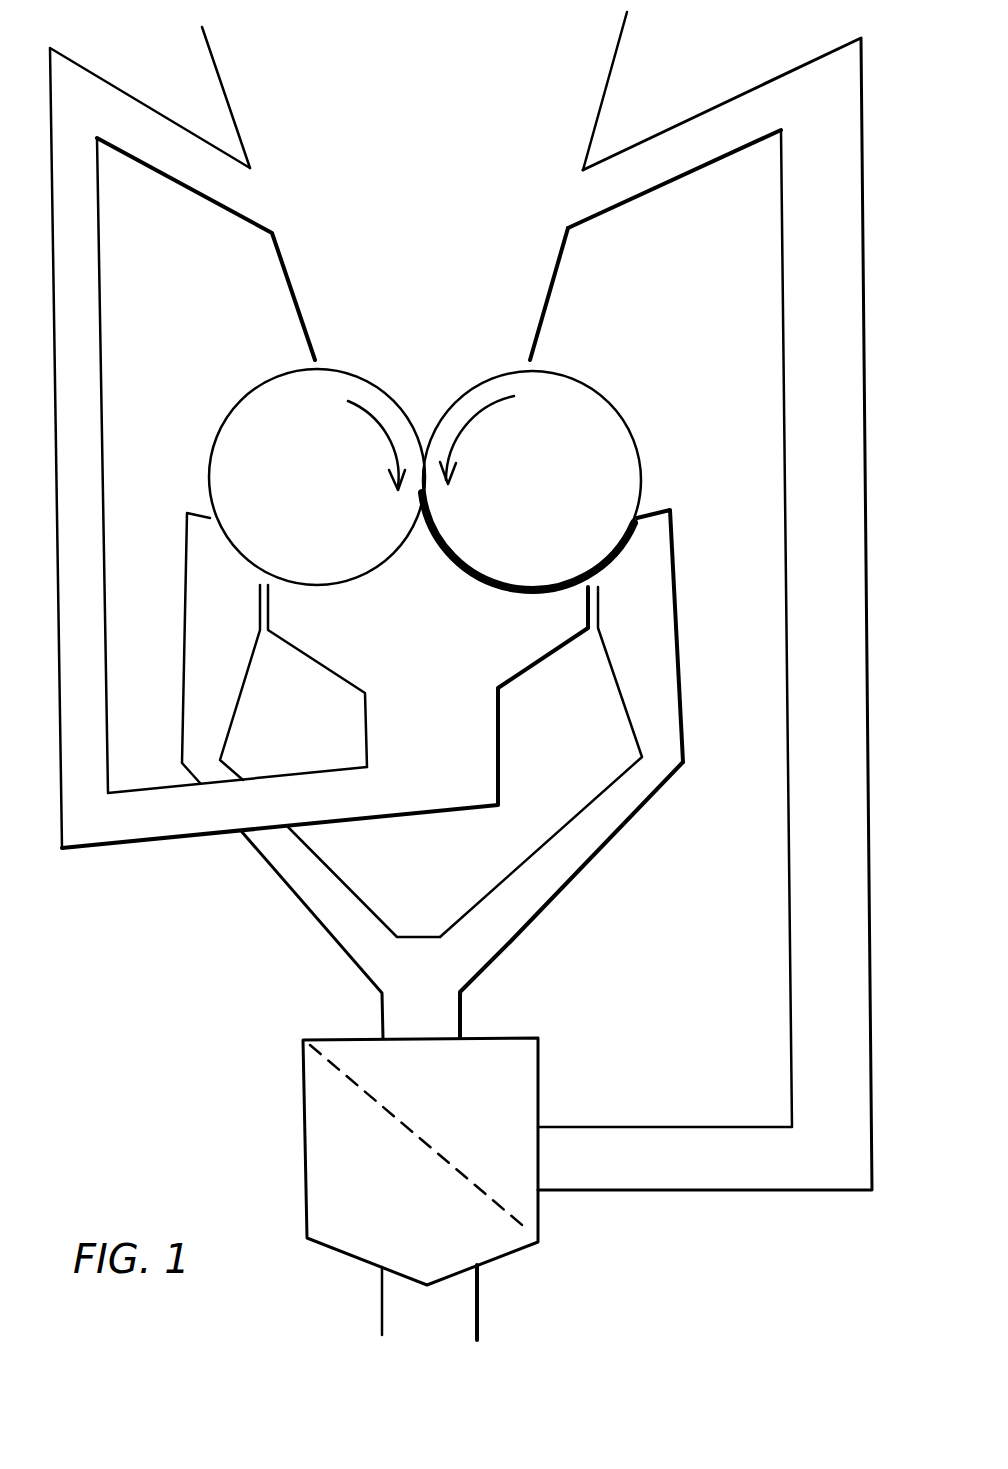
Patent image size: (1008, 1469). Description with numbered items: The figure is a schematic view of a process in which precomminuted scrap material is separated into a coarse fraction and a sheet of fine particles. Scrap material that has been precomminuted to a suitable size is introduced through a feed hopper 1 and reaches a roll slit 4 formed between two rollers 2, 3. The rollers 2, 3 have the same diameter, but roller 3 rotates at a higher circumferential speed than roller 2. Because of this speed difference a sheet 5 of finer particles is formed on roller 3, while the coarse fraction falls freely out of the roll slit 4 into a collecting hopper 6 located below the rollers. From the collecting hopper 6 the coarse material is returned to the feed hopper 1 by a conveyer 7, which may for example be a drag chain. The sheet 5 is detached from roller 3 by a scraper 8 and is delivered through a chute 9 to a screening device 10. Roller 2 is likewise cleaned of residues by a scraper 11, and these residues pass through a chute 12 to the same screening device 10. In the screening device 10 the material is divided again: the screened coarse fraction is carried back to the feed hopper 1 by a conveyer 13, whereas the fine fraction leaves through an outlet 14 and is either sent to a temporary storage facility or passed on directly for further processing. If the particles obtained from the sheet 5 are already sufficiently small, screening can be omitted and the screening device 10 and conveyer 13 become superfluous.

The feed hopper 1 is at (572, 63).
The roller 2 is at (267, 418).
The roller 3 is at (560, 413).
The roll slit 4 is at (420, 427).
The sheet 5 is at (512, 593).
The collecting hopper 6 is at (388, 692).
The conveyer 7 is at (87, 385).
The scraper 8 is at (653, 510).
The chute 9 is at (575, 855).
The screening device 10 is at (530, 1073).
The scraper 11 is at (210, 518).
The chute 12 is at (292, 865).
The conveyer 13 is at (800, 815).
The outlet 14 is at (455, 1302).